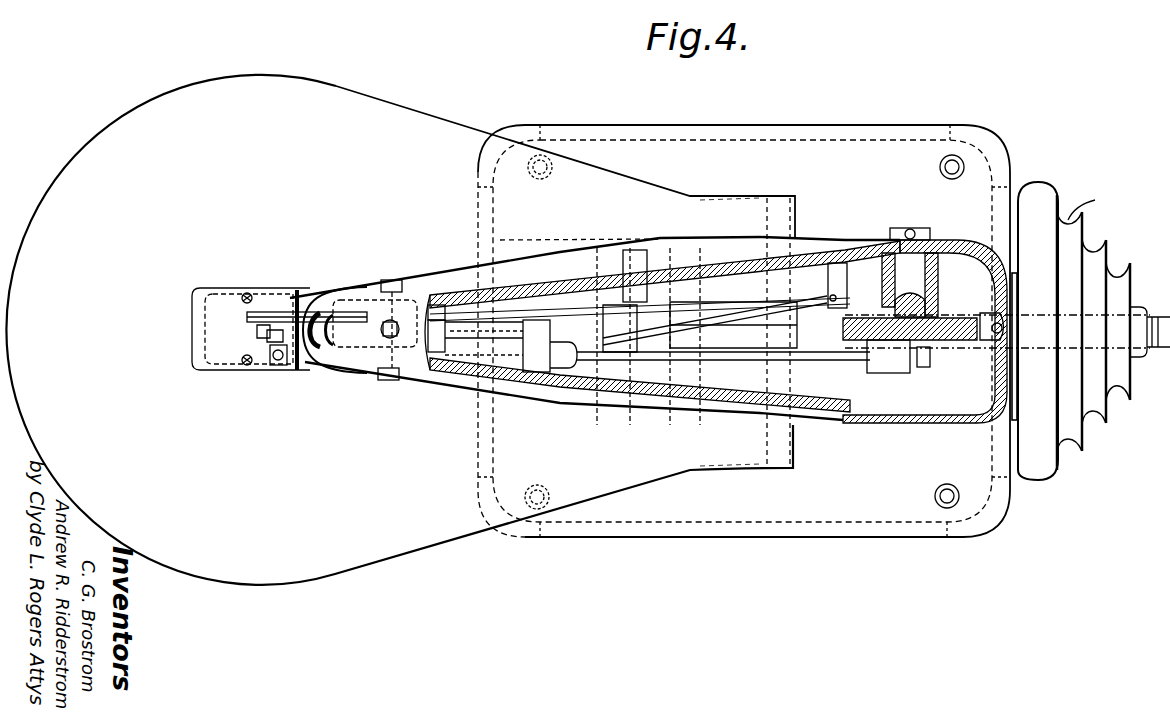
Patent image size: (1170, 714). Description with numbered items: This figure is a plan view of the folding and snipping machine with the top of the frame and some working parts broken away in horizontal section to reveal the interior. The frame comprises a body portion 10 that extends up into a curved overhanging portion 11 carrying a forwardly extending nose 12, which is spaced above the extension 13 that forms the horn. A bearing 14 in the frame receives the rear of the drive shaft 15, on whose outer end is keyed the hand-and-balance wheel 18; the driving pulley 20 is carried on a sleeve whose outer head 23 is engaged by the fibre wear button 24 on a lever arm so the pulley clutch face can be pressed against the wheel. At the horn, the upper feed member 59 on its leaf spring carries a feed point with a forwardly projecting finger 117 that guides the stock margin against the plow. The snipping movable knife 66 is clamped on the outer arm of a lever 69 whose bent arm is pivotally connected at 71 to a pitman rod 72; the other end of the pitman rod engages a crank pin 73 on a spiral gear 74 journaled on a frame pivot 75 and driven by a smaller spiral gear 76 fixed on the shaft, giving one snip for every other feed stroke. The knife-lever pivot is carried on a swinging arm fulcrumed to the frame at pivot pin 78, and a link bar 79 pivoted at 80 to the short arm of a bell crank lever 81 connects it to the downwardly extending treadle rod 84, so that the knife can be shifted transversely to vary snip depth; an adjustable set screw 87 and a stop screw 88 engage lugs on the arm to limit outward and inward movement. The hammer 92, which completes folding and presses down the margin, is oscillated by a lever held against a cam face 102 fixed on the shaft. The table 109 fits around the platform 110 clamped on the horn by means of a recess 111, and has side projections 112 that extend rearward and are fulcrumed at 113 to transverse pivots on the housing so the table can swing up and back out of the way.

The body portion 10 is at (1010, 474).
The curved overhanging portion 11 is at (585, 280).
The nose 12 is at (338, 306).
The extension 13 is at (246, 296).
The bearing 14 is at (968, 311).
The drive shaft 15 is at (1050, 343).
The hand-and-balance wheel 18 is at (1052, 194).
The driving pulley 20 is at (1093, 202).
The head 23 is at (1145, 315).
The wear button 24 is at (1152, 345).
The upper feed member 59 is at (256, 330).
The movable knife 66 is at (280, 366).
The lever 69 is at (490, 336).
The pivotal connection 71 is at (535, 375).
The pitman rod 72 is at (745, 349).
The crank pin 73 is at (890, 374).
The spiral gear 74 is at (950, 345).
The pivot 75 is at (918, 255).
The spiral gear 76 is at (922, 368).
The pivot pin 78 is at (393, 281).
The link bar 79 is at (600, 346).
The pivot 80 is at (621, 356).
The bell crank lever 81 is at (718, 320).
The treadle rod 84 is at (890, 245).
The adjustable set screw 87 is at (325, 350).
The stop screw 88 is at (388, 340).
The hammer 92 is at (297, 311).
The cam face 102 is at (833, 361).
The table 109 is at (378, 558).
The platform 110 is at (210, 368).
The recess 111 is at (210, 291).
The projections 112 is at (722, 468).
The fulcrum 113 is at (793, 452).
The finger 117 is at (270, 343).